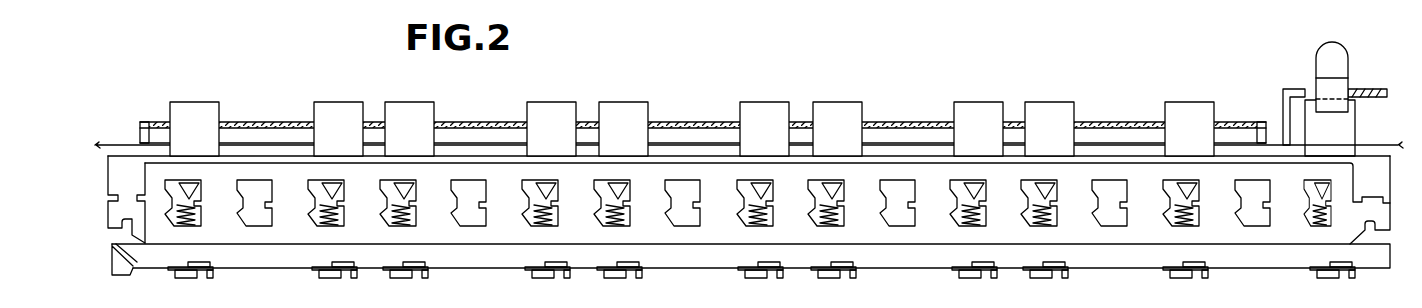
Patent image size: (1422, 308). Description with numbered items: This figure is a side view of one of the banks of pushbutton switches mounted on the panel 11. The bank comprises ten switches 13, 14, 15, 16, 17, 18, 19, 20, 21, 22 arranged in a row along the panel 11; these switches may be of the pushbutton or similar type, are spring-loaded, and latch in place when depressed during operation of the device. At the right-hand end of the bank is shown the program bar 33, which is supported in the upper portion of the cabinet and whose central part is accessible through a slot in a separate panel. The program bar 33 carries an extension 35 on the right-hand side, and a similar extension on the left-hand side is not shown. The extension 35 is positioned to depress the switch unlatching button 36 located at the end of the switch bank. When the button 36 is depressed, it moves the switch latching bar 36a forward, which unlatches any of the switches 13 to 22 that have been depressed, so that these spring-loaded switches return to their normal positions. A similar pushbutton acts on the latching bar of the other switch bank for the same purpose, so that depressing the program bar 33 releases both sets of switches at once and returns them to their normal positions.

The panel 11 is at (684, 118).
The switch 13 is at (187, 102).
The switch 14 is at (335, 102).
The switch 15 is at (402, 102).
The switch 16 is at (546, 102).
The switch 17 is at (612, 102).
The switch 18 is at (775, 102).
The switch 19 is at (826, 102).
The switch 20 is at (975, 102).
The switch 21 is at (1046, 102).
The switch 22 is at (1188, 102).
The program bar 33 is at (1327, 52).
The extension 35 is at (1327, 87).
The switch unlatching button 36 is at (1343, 133).
The switch latching bar 36a is at (884, 238).